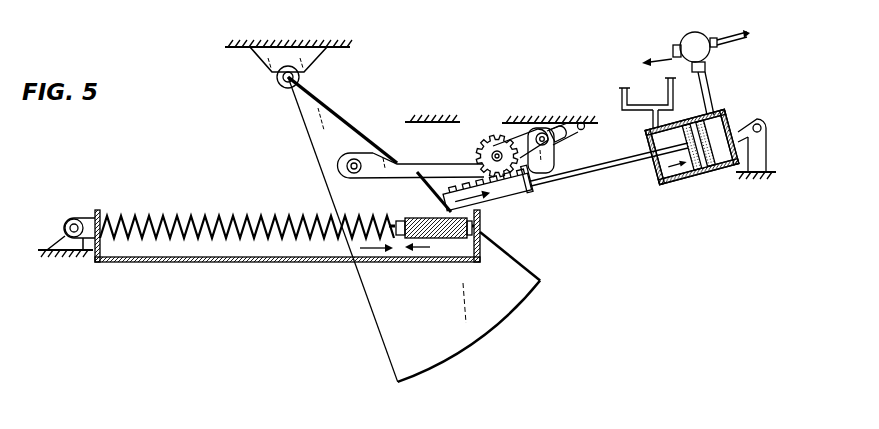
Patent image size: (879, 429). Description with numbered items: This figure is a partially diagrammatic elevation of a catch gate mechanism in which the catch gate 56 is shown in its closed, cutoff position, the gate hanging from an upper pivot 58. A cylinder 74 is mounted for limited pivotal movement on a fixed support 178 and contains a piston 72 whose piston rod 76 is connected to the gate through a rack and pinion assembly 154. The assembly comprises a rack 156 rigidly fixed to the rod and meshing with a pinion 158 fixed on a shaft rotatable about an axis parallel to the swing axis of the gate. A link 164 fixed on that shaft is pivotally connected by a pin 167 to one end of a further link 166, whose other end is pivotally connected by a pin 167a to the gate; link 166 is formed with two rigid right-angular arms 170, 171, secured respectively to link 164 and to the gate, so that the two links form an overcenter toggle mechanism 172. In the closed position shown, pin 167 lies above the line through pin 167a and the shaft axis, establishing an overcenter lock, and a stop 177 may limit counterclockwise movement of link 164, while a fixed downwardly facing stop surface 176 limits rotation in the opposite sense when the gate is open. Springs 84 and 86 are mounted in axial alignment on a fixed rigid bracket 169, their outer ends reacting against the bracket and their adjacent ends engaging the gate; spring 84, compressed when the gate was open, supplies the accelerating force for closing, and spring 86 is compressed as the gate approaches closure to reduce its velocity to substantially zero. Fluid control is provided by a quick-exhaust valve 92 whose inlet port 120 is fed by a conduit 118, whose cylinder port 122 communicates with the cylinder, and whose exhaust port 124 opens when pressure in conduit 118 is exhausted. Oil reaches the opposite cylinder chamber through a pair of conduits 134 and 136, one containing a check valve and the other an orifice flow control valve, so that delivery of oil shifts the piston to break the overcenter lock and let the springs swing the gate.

The catch gate 56 is at (419, 324).
The pivot 58 is at (280, 88).
The piston 72 is at (649, 141).
The cylinder 74 is at (668, 185).
The piston rod 76 is at (590, 174).
The spring 84 is at (211, 216).
The spring 86 is at (440, 240).
The valve 92 is at (701, 33).
The fluid flow conduit 118 is at (733, 42).
The inlet port 120 is at (705, 64).
The cylinder port 122 is at (711, 91).
The exhaust port 124 is at (676, 45).
The fluid flow conduit 134 is at (622, 99).
The fluid flow conduit 136 is at (672, 88).
The rack and pinion assembly 154 is at (490, 212).
The rack 156 is at (501, 196).
The pinion 158 is at (468, 138).
The link 164 is at (532, 192).
The link 166 is at (396, 145).
The pin 167 is at (546, 132).
The pin 167a is at (358, 160).
The bracket 169 is at (188, 262).
The arm 170 is at (548, 156).
The arm 171 is at (421, 170).
The overcenter toggle mechanism 172 is at (567, 136).
The stop surface 176 is at (433, 124).
The stop 177 is at (576, 123).
The fixed support 178 is at (756, 176).